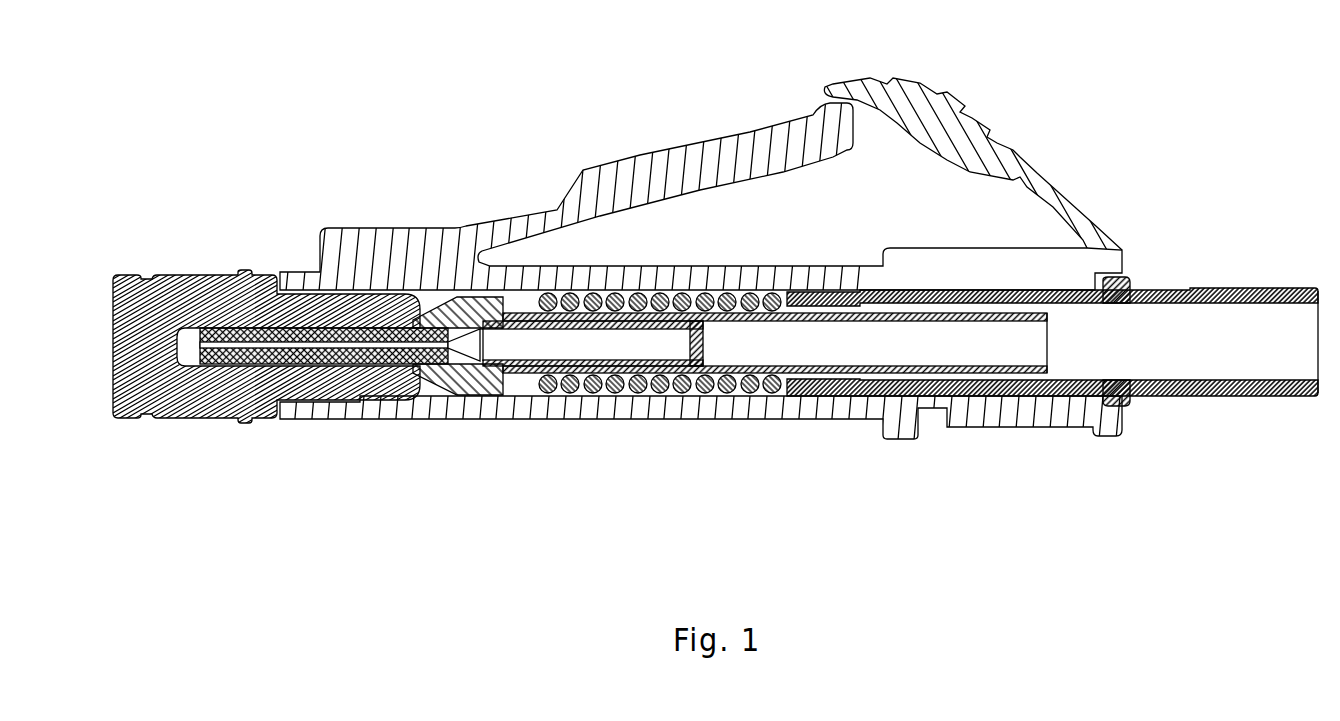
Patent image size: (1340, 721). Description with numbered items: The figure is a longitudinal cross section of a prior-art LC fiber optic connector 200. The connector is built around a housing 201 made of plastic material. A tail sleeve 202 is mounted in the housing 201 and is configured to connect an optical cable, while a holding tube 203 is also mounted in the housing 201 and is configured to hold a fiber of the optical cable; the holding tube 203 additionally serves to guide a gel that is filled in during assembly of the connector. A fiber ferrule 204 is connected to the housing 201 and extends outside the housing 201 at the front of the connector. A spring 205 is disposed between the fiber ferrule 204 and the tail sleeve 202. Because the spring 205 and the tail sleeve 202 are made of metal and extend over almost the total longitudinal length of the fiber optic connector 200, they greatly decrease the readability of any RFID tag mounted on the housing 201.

The fiber optic connector 200 is at (522, 146).
The housing 201 is at (402, 243).
The tail sleeve 202 is at (1178, 290).
The holding tube 203 is at (713, 372).
The fiber ferrule 204 is at (333, 350).
The spring 205 is at (587, 390).